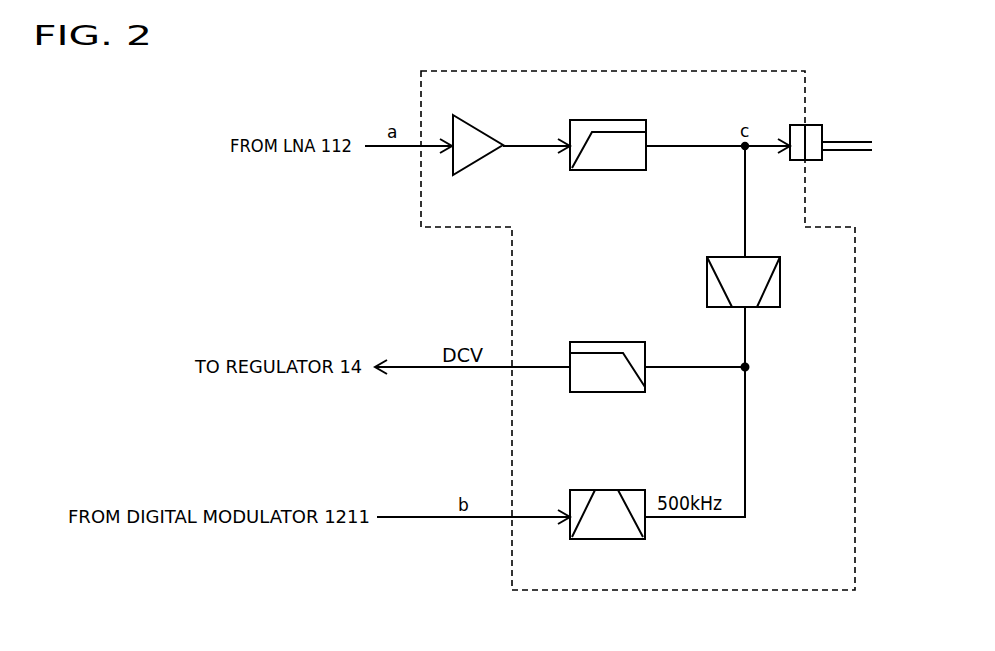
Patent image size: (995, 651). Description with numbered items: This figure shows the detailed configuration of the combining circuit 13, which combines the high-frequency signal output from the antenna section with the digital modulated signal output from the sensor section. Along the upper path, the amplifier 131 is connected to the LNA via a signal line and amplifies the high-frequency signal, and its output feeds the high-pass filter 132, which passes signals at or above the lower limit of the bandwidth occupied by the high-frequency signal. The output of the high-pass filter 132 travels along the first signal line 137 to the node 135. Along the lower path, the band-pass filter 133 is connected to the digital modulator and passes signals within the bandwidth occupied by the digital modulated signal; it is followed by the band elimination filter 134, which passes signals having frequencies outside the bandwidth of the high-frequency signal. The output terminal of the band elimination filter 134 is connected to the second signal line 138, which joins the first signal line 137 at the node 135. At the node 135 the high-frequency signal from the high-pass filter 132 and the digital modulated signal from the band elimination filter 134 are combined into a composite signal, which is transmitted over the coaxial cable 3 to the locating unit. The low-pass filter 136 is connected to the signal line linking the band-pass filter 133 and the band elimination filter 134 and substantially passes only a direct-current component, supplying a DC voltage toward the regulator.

The combining circuit 13 is at (855, 500).
The amplifier 131 is at (491, 129).
The high-pass filter 132 is at (613, 120).
The band-pass filter 133 is at (615, 490).
The band elimination filter 134 is at (747, 255).
The node 135 is at (752, 136).
The low-pass filter 136 is at (608, 340).
The first signal line 137 is at (680, 142).
The second signal line 138 is at (746, 210).
The coaxial cable 3 is at (833, 133).